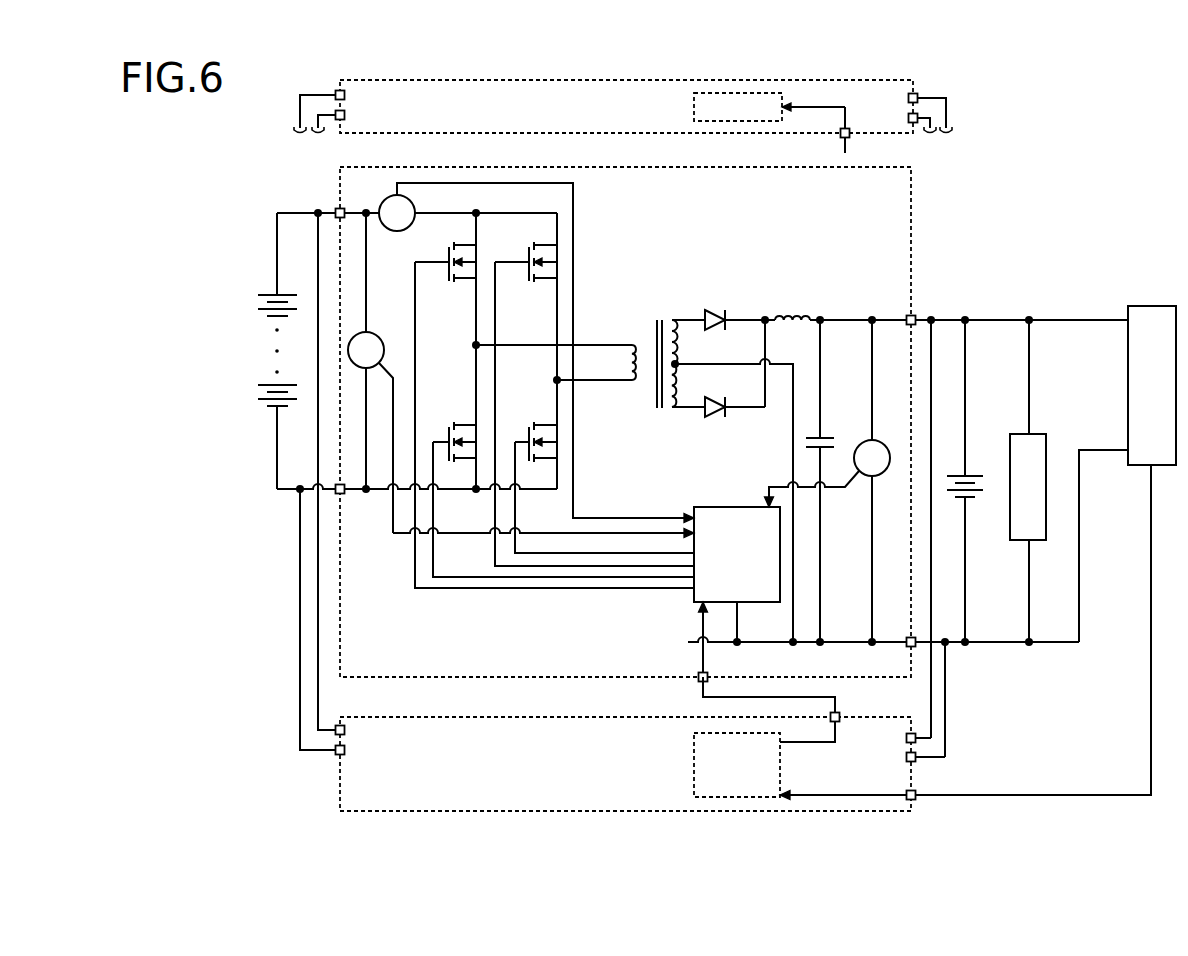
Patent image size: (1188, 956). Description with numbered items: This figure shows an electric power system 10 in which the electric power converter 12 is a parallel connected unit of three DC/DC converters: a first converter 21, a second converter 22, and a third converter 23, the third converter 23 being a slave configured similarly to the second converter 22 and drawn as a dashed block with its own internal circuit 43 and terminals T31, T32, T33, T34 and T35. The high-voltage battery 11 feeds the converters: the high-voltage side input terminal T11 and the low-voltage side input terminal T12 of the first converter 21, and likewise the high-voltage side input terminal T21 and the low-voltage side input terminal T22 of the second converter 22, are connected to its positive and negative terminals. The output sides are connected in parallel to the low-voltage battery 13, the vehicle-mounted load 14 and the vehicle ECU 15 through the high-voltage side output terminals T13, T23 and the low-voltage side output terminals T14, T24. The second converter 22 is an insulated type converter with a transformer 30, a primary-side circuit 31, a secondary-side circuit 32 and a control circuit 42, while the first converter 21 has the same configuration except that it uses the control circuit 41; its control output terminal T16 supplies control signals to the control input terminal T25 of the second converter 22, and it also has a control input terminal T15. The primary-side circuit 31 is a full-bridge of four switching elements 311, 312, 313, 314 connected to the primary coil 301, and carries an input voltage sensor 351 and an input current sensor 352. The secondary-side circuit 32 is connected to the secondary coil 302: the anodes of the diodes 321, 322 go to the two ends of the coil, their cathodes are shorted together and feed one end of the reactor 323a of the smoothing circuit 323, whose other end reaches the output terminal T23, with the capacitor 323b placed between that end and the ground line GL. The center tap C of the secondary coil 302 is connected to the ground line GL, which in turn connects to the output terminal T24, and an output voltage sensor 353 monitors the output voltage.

The electric power system 10 is at (1166, 190).
The high-voltage battery 11 is at (264, 295).
The electric power converter 12 is at (679, 750).
The low-voltage battery 13 is at (973, 474).
The vehicle-mounted load 14 is at (1038, 433).
The vehicle ECU 15 is at (1158, 306).
The first converter 21 is at (911, 771).
The second converter 22 is at (911, 205).
The third converter 23 is at (913, 80).
The transformer 30 is at (634, 463).
The primary-side circuit 31 is at (554, 392).
The secondary-side circuit 32 is at (911, 424).
The control circuit 41 is at (694, 745).
The control circuit 42 is at (753, 510).
The auxiliary circuit 43 is at (755, 93).
The primary coil 301 is at (640, 344).
The secondary coil 302 is at (678, 317).
The switching element 311 is at (450, 280).
The switching element 312 is at (530, 280).
The switching element 313 is at (440, 425).
The switching element 314 is at (520, 425).
The diode 321 is at (724, 310).
The diode 322 is at (716, 420).
The smoothing circuit 323 is at (818, 451).
The reactor 323a is at (789, 316).
The capacitor 323b is at (840, 433).
The input voltage sensor 351 is at (370, 337).
The input current sensor 352 is at (388, 201).
The output voltage sensor 353 is at (900, 447).
The center tap C is at (680, 362).
The ground line GL is at (845, 640).
The high-voltage side input terminal T11 is at (346, 730).
The low-voltage side input terminal T12 is at (346, 750).
The high-voltage side output terminal T13 is at (905, 738).
The low-voltage output terminal T14 is at (905, 757).
The control input terminal T15 is at (915, 799).
The control output terminal T16 is at (852, 705).
The high-voltage side input terminal T21 is at (338, 207).
The low-voltage side input terminal T22 is at (345, 494).
The high-voltage side output terminal T23 is at (915, 320).
The low-voltage side output terminal T24 is at (911, 638).
The control input terminal T25 is at (699, 675).
The terminal T31 is at (346, 95).
The terminal T32 is at (346, 115).
The terminal T33 is at (907, 98).
The terminal T34 is at (907, 118).
The terminal T35 is at (849, 137).